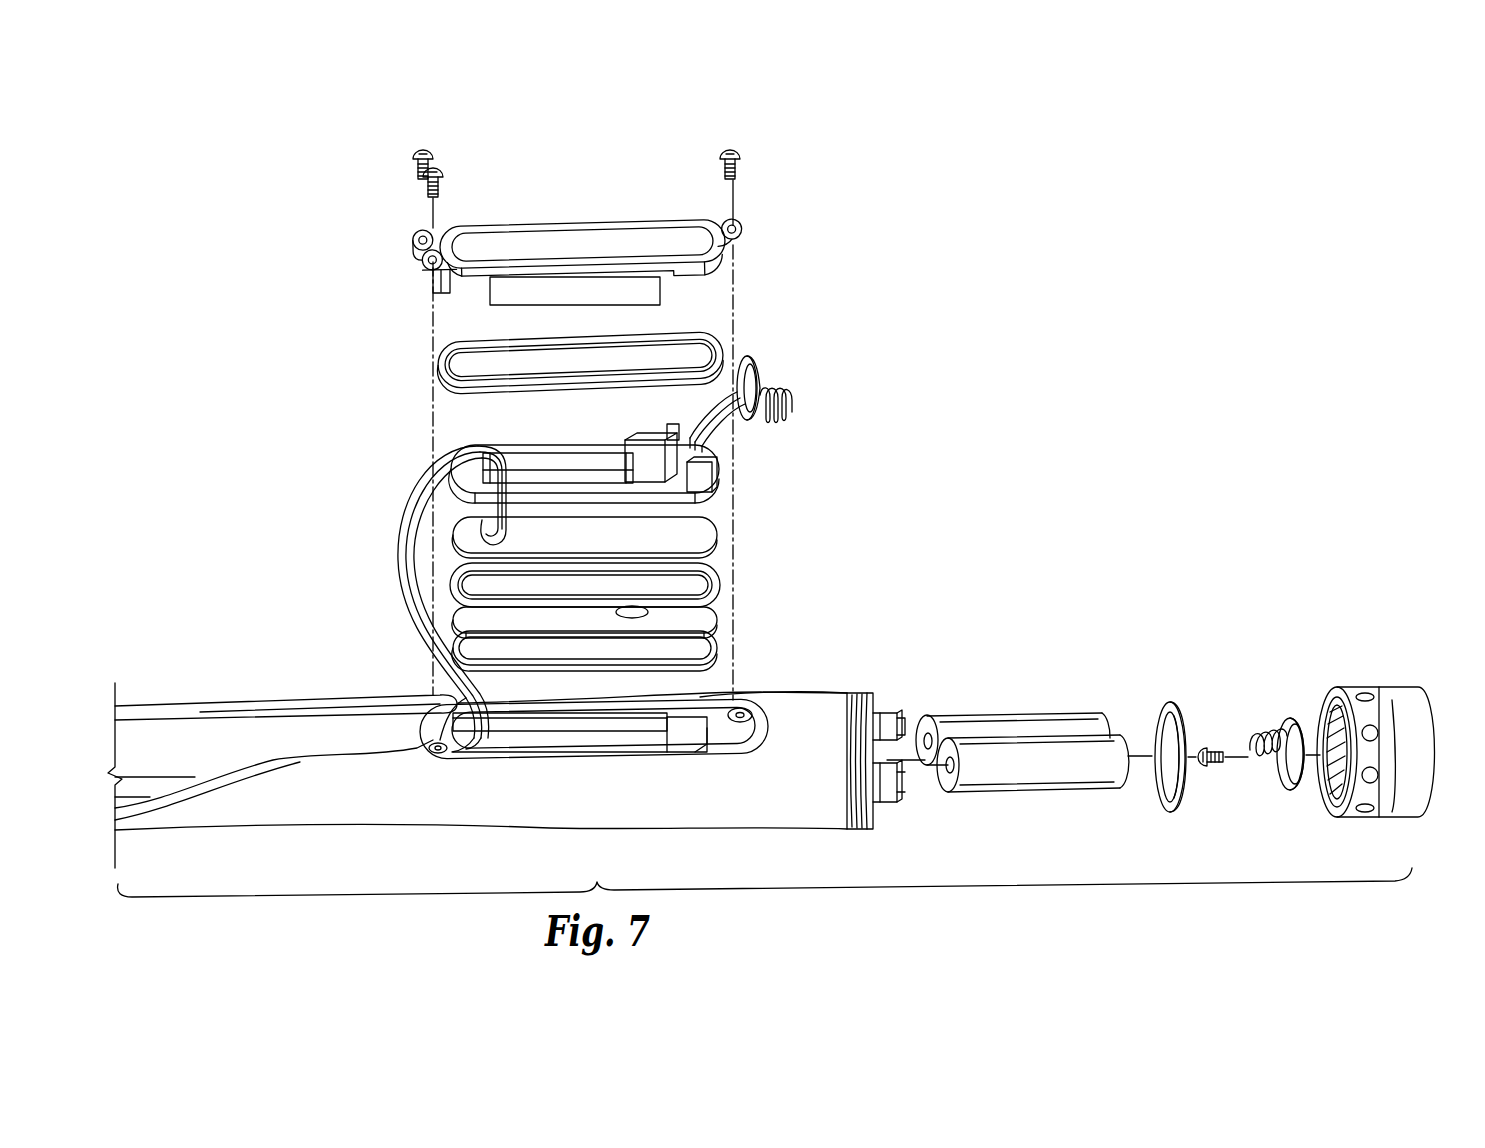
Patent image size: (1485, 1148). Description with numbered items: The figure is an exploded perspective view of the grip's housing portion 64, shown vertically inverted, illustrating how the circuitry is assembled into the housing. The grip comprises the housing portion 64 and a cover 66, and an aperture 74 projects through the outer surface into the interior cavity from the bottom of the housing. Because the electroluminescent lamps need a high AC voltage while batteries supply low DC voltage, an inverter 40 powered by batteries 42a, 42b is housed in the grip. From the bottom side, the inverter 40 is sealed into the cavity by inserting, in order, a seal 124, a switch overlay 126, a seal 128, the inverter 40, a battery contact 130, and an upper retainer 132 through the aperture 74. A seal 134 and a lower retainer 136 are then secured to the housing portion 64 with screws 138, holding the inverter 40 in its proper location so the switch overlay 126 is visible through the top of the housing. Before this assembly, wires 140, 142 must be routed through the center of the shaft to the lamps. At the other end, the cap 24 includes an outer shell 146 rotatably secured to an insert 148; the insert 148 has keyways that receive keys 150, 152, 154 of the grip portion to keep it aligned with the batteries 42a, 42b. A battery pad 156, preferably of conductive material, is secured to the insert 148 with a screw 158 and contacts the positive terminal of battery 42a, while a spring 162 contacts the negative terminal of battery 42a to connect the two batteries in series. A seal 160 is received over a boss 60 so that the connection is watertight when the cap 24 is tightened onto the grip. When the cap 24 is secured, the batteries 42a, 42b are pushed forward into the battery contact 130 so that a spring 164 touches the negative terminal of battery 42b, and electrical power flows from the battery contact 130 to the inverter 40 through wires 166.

The cap 24 is at (1400, 686).
The inverter 40 is at (722, 535).
The battery 42a is at (1047, 780).
The battery 42b is at (1046, 718).
The boss 60 is at (860, 830).
The housing portion 64 is at (795, 690).
The cover 66 is at (272, 702).
The aperture 74 is at (613, 724).
The seal 124 is at (722, 642).
The switch overlay 126 is at (722, 608).
The seal 128 is at (722, 575).
The battery contact 130 is at (760, 377).
The upper retainer 132 is at (726, 480).
The seal 134 is at (722, 352).
The lower retainer 136 is at (752, 232).
The screws 138 is at (424, 182).
The wire 140 is at (400, 493).
The wire 142 is at (478, 690).
The outer shell 146 is at (1405, 775).
The insert 148 is at (1338, 740).
The key 150 is at (896, 800).
The key 152 is at (884, 718).
The key 154 is at (898, 742).
The battery pad 156 is at (1290, 790).
The screw 158 is at (1217, 766).
The seal 160 is at (1170, 700).
The spring 162 is at (1266, 735).
The spring 164 is at (796, 410).
The wires 166 is at (712, 432).